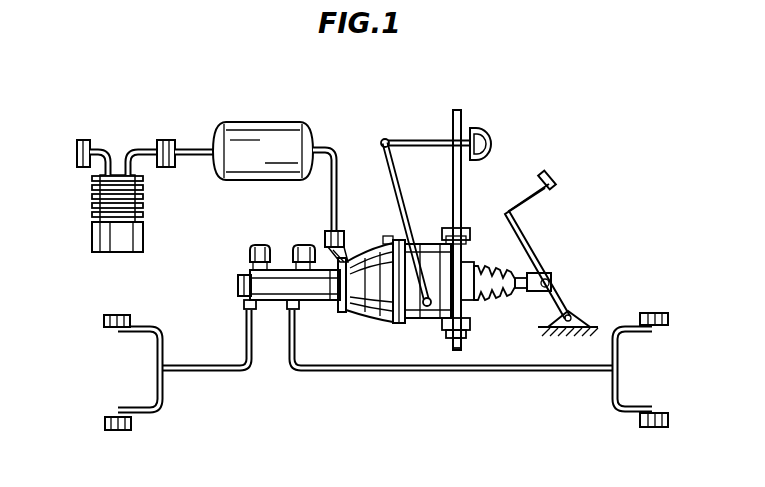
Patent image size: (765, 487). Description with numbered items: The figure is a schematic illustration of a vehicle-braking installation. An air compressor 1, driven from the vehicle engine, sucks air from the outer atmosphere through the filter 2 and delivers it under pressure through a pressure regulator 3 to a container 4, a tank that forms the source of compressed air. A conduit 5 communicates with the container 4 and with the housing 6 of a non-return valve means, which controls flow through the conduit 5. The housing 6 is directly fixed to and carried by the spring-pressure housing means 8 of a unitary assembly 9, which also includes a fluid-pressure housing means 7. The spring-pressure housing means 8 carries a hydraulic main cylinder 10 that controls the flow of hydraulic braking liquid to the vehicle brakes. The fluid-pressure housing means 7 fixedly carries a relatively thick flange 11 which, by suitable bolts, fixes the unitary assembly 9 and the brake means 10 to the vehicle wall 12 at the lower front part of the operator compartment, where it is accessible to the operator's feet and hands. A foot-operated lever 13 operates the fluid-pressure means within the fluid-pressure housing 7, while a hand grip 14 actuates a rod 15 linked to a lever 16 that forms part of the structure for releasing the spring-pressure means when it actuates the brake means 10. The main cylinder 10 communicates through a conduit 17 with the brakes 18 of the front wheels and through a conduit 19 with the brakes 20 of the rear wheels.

The air compressor 1 is at (95, 235).
The filter 2 is at (77, 152).
The pressure regulator 3 is at (166, 140).
The container 4 is at (258, 128).
The conduit 5 is at (338, 172).
The housing of non-return valve means 6 is at (343, 237).
The fluid-pressure housing means 7 is at (420, 318).
The spring-pressure housing means 8 is at (372, 315).
The unitary assembly 9 is at (390, 338).
The hydraulic main cylinder 10 is at (256, 279).
The flange 11 is at (453, 338).
The vehicle wall 12 is at (462, 345).
The foot-operated lever 13 is at (550, 300).
The hand grip 14 is at (487, 136).
The rod 15 is at (415, 139).
The lever 16 is at (399, 193).
The conduit 17 is at (212, 371).
The brakes of the front wheels 18 is at (110, 327).
The conduit 19 is at (538, 371).
The brakes of the rear wheels 20 is at (660, 327).